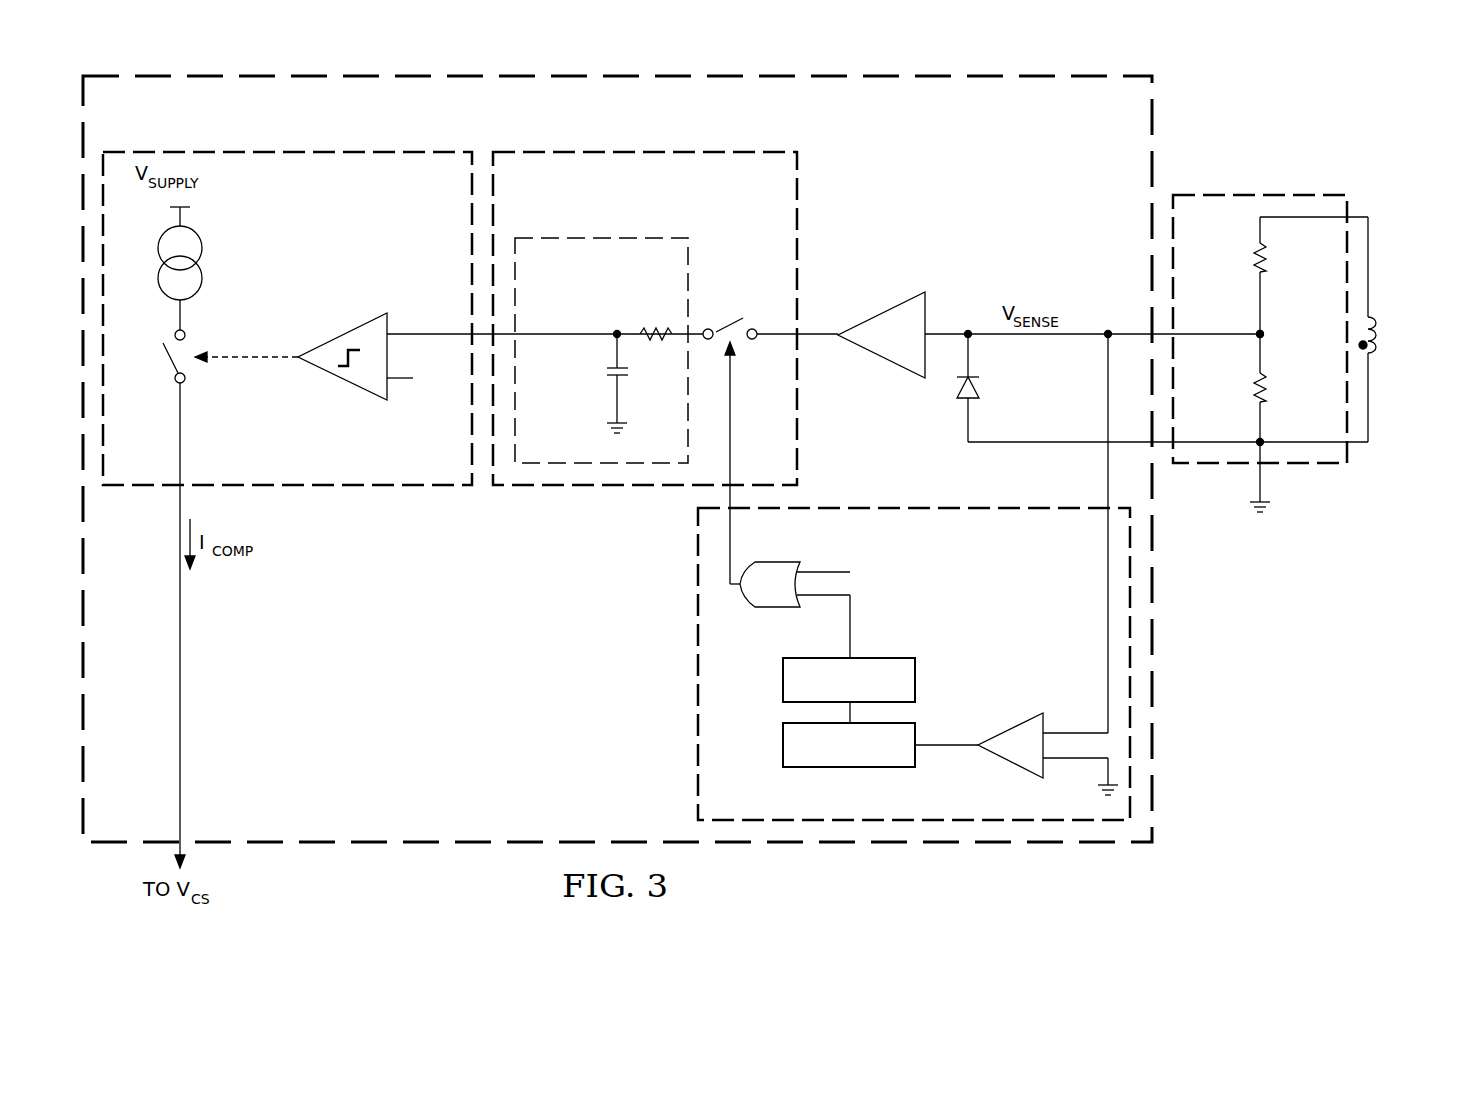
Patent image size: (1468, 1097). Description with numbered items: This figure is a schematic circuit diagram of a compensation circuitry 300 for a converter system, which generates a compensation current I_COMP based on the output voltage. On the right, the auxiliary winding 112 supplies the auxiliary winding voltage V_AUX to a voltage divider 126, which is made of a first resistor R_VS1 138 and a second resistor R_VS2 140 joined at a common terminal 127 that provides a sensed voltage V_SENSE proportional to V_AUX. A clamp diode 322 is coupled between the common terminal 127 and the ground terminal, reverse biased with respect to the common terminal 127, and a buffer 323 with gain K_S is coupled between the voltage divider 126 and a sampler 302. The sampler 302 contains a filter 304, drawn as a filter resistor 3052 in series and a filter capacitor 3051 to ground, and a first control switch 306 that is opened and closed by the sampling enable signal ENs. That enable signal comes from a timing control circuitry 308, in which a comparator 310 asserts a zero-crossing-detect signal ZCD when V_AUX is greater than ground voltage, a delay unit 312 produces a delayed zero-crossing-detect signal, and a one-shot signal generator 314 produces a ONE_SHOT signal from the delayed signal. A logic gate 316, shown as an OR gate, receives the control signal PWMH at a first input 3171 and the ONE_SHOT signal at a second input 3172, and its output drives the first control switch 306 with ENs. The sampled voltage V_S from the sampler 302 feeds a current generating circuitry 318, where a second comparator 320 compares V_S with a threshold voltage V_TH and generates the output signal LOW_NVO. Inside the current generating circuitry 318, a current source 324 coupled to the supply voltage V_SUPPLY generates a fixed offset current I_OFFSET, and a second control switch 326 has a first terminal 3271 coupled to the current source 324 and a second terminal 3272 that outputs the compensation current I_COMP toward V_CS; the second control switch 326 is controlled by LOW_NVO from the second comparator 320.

The compensation circuitry 300 is at (930, 72).
The current generating circuitry 318 is at (235, 148).
The current source 324 is at (202, 247).
The first terminal 3271 is at (185, 320).
The second control switch 326 is at (170, 362).
The second terminal 3272 is at (186, 392).
The second comparator 320 is at (342, 384).
The sampler 302 is at (602, 148).
The filter 304 is at (570, 236).
The filter resistor 3052 is at (648, 326).
The filter capacitor 3051 is at (605, 370).
The first control switch 306 is at (728, 325).
The buffer 323 is at (882, 312).
The clamp diode 322 is at (980, 386).
The voltage divider 126 is at (1290, 190).
The first resistor R_VS1 138 is at (1266, 257).
The common terminal 127 is at (1264, 328).
The second resistor R_VS2 140 is at (1266, 386).
The auxiliary winding 112 is at (1386, 330).
The timing control circuitry 308 is at (694, 745).
The logic gate 316 is at (758, 607).
The first input 3171 is at (815, 572).
The second input 3172 is at (815, 596).
The one-shot signal generator 314 is at (783, 680).
The delay unit 312 is at (783, 755).
The comparator 310 is at (1012, 766).